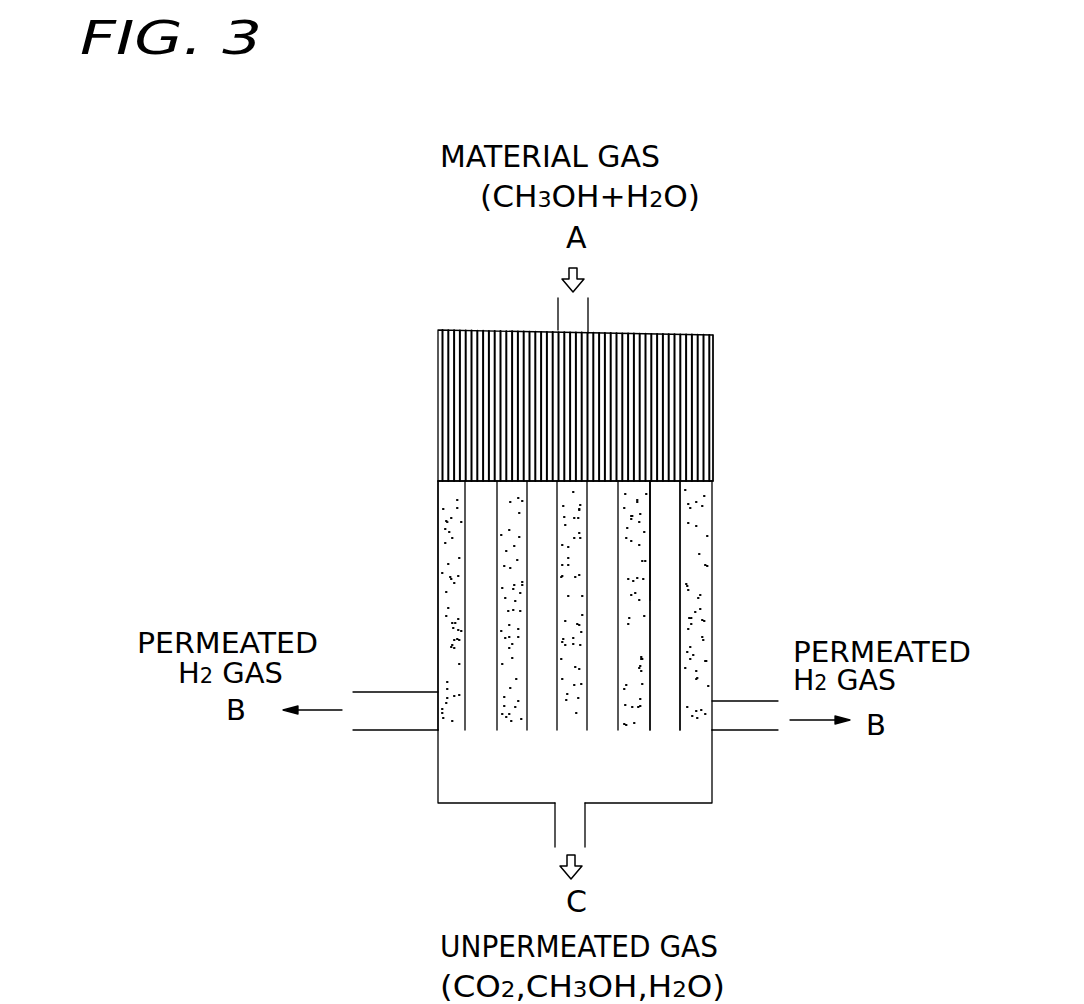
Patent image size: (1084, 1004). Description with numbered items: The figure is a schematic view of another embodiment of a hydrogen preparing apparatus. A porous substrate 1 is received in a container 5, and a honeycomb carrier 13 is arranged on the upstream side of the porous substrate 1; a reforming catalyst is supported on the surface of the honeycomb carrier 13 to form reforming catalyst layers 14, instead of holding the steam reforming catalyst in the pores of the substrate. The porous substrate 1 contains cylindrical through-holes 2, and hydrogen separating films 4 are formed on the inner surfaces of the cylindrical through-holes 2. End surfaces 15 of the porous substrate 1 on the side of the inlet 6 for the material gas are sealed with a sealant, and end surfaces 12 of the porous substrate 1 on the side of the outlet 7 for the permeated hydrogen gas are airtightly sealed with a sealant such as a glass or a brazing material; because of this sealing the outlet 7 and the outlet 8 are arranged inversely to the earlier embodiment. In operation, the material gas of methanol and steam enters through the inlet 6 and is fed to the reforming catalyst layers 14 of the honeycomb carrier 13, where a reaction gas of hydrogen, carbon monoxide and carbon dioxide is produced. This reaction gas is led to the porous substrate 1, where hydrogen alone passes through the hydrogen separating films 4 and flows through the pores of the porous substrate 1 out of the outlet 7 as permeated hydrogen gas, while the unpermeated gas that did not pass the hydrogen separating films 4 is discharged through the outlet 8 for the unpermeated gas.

The porous substrate 1 is at (438, 632).
The cylindrical through-holes 2 is at (672, 570).
The hydrogen separating films 4 is at (650, 528).
The container 5 is at (438, 578).
The inlet for a material gas 6 is at (575, 318).
The outlet for a permeated hydrogen gas 7 is at (385, 712).
The outlet for an unpermeated gas 8 is at (566, 825).
The end surfaces of the porous substrate 12 is at (460, 731).
The honeycomb carrier 13 is at (714, 352).
The reforming catalyst layers 14 is at (713, 426).
The end surfaces of the porous substrate 15 is at (462, 481).